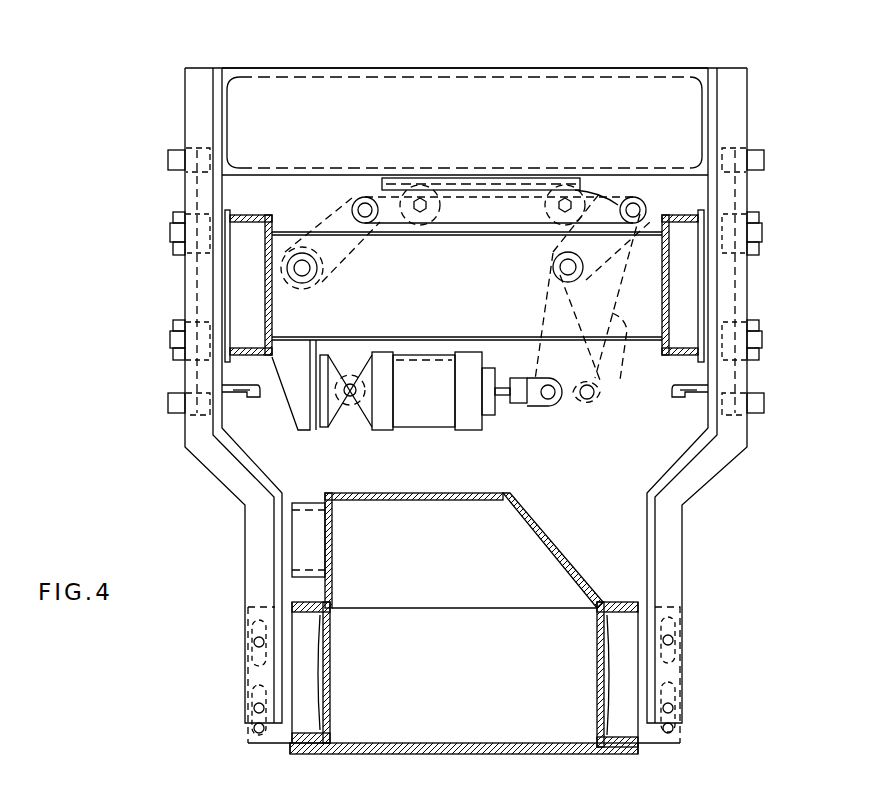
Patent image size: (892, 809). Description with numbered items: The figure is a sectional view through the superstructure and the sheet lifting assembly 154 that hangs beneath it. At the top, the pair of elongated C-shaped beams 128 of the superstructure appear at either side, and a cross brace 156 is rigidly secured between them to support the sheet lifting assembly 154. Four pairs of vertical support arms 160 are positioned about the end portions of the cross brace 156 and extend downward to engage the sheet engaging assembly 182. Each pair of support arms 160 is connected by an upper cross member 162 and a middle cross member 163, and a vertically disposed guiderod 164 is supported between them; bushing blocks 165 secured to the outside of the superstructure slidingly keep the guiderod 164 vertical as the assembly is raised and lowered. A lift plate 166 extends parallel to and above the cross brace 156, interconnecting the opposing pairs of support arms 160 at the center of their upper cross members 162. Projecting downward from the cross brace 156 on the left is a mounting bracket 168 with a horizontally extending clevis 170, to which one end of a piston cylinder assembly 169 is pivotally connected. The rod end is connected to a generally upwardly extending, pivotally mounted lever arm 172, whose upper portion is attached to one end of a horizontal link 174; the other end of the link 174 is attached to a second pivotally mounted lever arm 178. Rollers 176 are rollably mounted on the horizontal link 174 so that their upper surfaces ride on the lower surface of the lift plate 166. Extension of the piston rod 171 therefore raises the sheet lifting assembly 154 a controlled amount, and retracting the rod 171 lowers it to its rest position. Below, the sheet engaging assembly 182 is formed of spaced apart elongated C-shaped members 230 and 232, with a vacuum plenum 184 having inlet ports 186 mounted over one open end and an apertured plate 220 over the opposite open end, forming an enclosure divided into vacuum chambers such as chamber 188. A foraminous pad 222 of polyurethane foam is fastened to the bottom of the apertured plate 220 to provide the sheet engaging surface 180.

The C-shaped beam 128 is at (262, 268).
The sheet lifting assembly 154 is at (153, 442).
The cross brace 156 is at (456, 308).
The vertical support arm 160 is at (218, 472).
The upper cross member 162 is at (235, 73).
The middle cross member 163 is at (240, 392).
The guiderod 164 is at (182, 184).
The bushing block 165 is at (172, 245).
The lift plate 166 is at (495, 125).
The mounting bracket 168 is at (298, 420).
The piston cylinder assembly 169 is at (425, 420).
The clevis 170 is at (350, 398).
The piston rod 171 is at (502, 392).
The lever arm 172 is at (602, 376).
The horizontal link 174 is at (600, 195).
The roller 176 is at (545, 210).
The lever arm 178 is at (347, 214).
The sheet engaging surface 180 is at (640, 752).
The sheet engaging assembly 182 is at (705, 622).
The vacuum plenum 184 is at (462, 561).
The inlet port 186 is at (300, 541).
The vacuum chamber 188 is at (490, 671).
The apertured plate 220 is at (368, 754).
The foraminous pad 222 is at (455, 754).
The C-shaped member 230 is at (320, 680).
The C-shaped member 232 is at (610, 698).